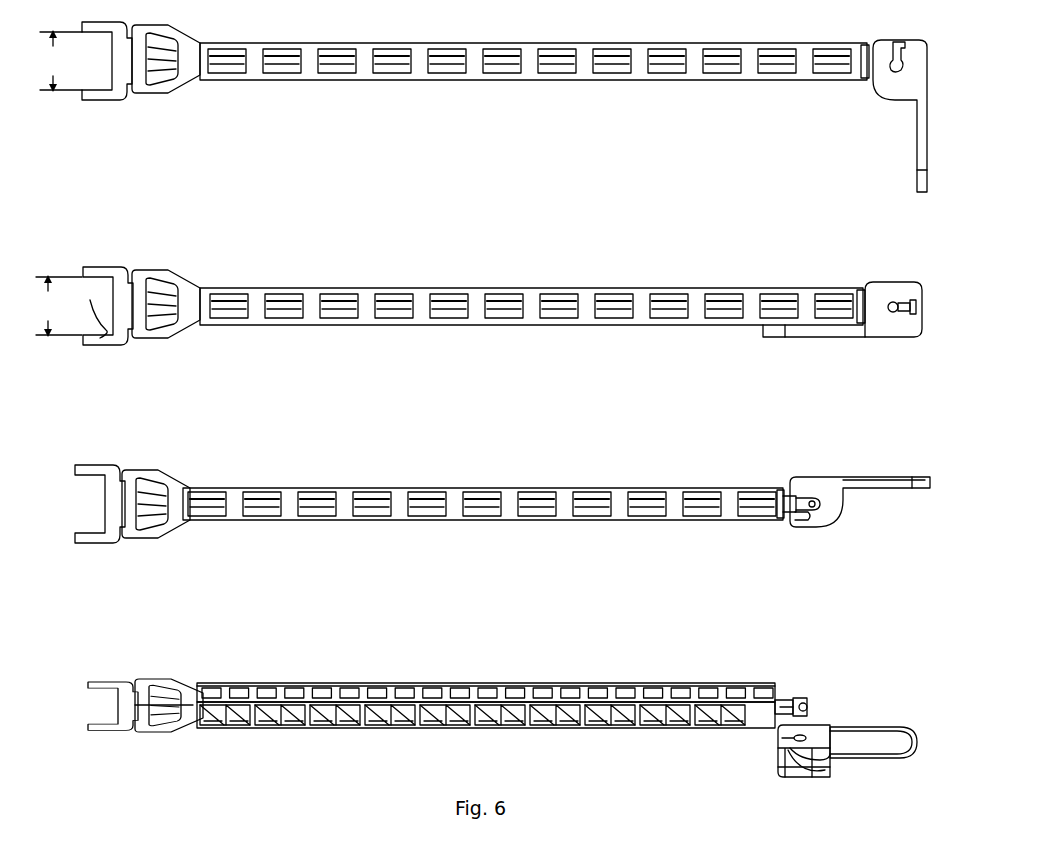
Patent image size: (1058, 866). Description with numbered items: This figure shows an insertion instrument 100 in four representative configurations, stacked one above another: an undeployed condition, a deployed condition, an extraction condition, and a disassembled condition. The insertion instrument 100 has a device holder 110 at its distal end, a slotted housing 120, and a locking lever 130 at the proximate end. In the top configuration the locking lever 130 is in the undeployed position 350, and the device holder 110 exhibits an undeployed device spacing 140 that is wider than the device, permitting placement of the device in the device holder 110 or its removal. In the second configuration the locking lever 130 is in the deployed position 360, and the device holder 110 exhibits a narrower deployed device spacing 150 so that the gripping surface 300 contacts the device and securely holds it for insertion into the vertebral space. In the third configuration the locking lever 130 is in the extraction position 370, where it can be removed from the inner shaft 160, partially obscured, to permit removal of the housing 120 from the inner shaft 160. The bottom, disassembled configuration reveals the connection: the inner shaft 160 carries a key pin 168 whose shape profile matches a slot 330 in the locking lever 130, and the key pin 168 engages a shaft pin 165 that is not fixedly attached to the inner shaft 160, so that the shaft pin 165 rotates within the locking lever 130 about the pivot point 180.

The insertion instrument 100 is at (346, 108).
The device holder 110 is at (94, 114).
The housing 120 is at (510, 80).
The locking lever 130 is at (876, 477).
The undeployed device spacing 140 is at (59, 61).
The deployed device spacing 150 is at (56, 306).
The inner shaft 160 is at (793, 490).
The shaft pin 165 is at (808, 762).
The key pin 168 is at (816, 497).
The pivot point 180 is at (797, 787).
The gripping surface 300 is at (135, 306).
The slot 330 is at (806, 518).
The undeployed position 350 is at (866, 133).
The deployed position 360 is at (856, 357).
The extraction position 370 is at (896, 529).